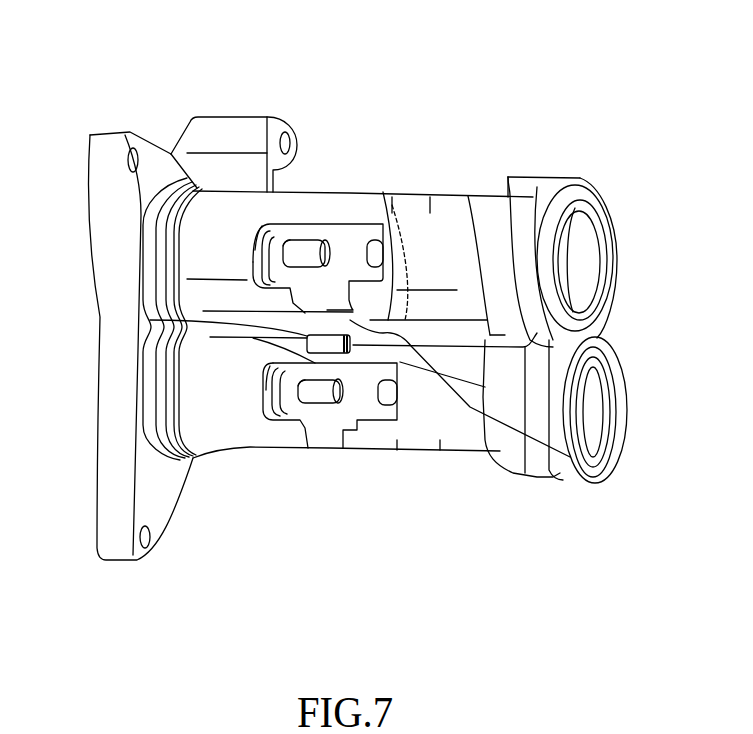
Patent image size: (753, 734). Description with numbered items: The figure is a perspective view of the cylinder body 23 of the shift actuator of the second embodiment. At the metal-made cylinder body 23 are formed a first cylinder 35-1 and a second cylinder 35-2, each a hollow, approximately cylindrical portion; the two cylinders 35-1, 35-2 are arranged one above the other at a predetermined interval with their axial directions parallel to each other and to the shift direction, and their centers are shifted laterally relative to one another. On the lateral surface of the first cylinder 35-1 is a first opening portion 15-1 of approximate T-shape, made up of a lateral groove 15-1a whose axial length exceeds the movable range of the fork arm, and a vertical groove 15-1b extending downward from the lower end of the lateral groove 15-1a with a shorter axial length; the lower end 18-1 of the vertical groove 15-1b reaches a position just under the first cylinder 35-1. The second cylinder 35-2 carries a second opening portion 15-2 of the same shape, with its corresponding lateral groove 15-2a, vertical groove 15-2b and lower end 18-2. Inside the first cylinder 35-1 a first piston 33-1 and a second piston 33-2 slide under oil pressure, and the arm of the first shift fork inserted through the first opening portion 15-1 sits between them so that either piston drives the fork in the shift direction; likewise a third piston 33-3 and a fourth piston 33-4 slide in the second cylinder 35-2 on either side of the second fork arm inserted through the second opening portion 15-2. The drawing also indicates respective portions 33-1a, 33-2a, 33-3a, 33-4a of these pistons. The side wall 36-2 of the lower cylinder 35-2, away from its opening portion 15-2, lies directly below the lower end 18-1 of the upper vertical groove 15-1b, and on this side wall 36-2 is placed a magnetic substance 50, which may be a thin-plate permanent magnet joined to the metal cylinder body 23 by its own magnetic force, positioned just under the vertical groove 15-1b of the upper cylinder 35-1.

The first opening portion 15-1 is at (310, 240).
The lateral groove 15-1a is at (372, 240).
The vertical groove 15-1b is at (284, 238).
The second opening portion 15-2 is at (350, 418).
The second protruding portion side part 15-2a is at (395, 425).
The second protruding portion end part 15-2b is at (340, 428).
The lower end of the vertical groove 18-1 is at (190, 317).
The second housing body 18-2 is at (312, 448).
The cylinder body 23 is at (522, 176).
The first piston 33-1 is at (280, 233).
The first clip bent portion 33-1a is at (275, 233).
The second piston 33-2 is at (431, 208).
The second clip flat portion 33-2a is at (394, 206).
The third piston 33-3 is at (257, 437).
The third clip bent portion 33-3a is at (298, 422).
The fourth piston 33-4 is at (441, 448).
The fourth clip flat portion 33-4a is at (399, 448).
The first cylinder 35-1 is at (467, 214).
The second cylinder 35-2 is at (470, 442).
The side wall 36-2 is at (430, 378).
The magnetic substance 50 is at (340, 452).